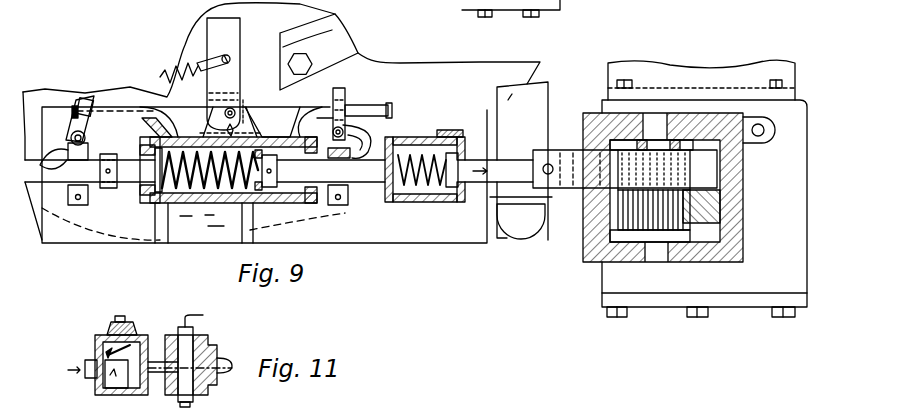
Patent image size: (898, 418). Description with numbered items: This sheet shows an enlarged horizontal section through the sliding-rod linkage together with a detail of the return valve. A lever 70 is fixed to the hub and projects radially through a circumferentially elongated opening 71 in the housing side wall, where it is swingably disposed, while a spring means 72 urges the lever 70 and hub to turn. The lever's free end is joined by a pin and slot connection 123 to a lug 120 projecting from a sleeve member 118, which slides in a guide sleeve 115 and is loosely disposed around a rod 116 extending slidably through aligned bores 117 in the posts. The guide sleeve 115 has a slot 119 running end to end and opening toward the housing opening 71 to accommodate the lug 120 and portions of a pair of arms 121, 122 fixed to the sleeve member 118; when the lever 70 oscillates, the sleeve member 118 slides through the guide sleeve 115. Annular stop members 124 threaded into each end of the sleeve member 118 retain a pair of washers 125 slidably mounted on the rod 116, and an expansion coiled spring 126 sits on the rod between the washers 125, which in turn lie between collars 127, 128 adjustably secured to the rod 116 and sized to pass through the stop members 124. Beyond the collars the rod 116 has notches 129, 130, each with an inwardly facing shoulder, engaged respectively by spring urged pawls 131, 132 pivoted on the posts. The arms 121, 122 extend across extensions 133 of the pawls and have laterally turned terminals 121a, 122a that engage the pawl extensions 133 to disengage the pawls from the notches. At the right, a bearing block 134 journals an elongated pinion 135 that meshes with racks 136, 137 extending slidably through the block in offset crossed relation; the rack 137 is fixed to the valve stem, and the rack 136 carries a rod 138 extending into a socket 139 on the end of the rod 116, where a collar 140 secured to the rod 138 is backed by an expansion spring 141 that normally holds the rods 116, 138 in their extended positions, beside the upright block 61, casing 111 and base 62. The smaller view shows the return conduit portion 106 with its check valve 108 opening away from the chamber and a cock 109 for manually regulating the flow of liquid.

In FIG. 9, the upright block 61 is at (548, 98).
In FIG. 9, the machine base 62 is at (671, 290).
In FIG. 9, the lever 70 is at (242, 45).
In FIG. 9, the circumferentially elongated opening 71 is at (256, 70).
In FIG. 9, the spring means 72 is at (163, 78).
In FIG. 11, the return conduit portion 106 is at (160, 378).
In FIG. 11, the check valve 108 is at (131, 330).
In FIG. 11, the cock 109 is at (214, 381).
In FIG. 9, the casing 111 is at (808, 215).
In FIG. 9, the sleeve 115 is at (212, 208).
In FIG. 9, the rod 116 is at (350, 186).
In FIG. 9, the bores 117 is at (92, 164).
In FIG. 9, the sleeve member 118 is at (268, 135).
In FIG. 9, the slot 119 is at (170, 134).
In FIG. 9, the lug 120 is at (238, 113).
In FIG. 9, the arm 121 is at (122, 98).
In FIG. 9, the laterally turned terminal 121a is at (74, 104).
In FIG. 9, the arm 122 is at (352, 104).
In FIG. 9, the laterally turned terminal 122a is at (393, 106).
In FIG. 9, the pin and slot connection 123 is at (243, 100).
In FIG. 9, the annular stop member 124 is at (140, 194).
In FIG. 9, the washer 125 is at (155, 163).
In FIG. 9, the expansion coiled spring 126 is at (183, 203).
In FIG. 9, the collar 127 is at (107, 154).
In FIG. 9, the collar 128 is at (278, 161).
In FIG. 9, the notch 129 is at (40, 176).
In FIG. 9, the notch 130 is at (332, 160).
In FIG. 9, the spring urged pawl 131 is at (55, 137).
In FIG. 9, the spring urged pawl 132 is at (366, 142).
In FIG. 9, the pawl extension 133 is at (90, 100).
In FIG. 9, the bearing block 134 is at (581, 262).
In FIG. 9, the elongated pinion 135 is at (609, 257).
In FIG. 9, the rack 136 is at (720, 173).
In FIG. 9, the rack 137 is at (725, 207).
In FIG. 9, the rod 138 is at (465, 200).
In FIG. 9, the socket 139 is at (402, 200).
In FIG. 9, the collar 140 is at (455, 130).
In FIG. 9, the expansion spring 141 is at (430, 190).